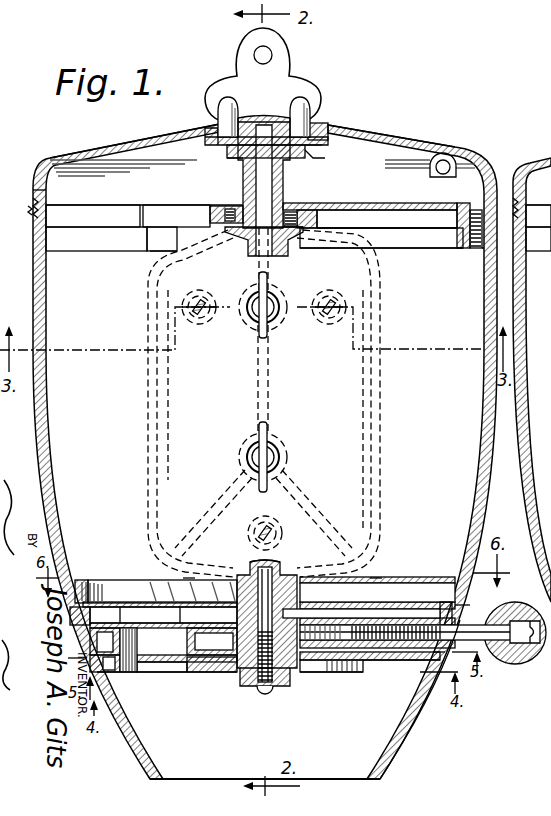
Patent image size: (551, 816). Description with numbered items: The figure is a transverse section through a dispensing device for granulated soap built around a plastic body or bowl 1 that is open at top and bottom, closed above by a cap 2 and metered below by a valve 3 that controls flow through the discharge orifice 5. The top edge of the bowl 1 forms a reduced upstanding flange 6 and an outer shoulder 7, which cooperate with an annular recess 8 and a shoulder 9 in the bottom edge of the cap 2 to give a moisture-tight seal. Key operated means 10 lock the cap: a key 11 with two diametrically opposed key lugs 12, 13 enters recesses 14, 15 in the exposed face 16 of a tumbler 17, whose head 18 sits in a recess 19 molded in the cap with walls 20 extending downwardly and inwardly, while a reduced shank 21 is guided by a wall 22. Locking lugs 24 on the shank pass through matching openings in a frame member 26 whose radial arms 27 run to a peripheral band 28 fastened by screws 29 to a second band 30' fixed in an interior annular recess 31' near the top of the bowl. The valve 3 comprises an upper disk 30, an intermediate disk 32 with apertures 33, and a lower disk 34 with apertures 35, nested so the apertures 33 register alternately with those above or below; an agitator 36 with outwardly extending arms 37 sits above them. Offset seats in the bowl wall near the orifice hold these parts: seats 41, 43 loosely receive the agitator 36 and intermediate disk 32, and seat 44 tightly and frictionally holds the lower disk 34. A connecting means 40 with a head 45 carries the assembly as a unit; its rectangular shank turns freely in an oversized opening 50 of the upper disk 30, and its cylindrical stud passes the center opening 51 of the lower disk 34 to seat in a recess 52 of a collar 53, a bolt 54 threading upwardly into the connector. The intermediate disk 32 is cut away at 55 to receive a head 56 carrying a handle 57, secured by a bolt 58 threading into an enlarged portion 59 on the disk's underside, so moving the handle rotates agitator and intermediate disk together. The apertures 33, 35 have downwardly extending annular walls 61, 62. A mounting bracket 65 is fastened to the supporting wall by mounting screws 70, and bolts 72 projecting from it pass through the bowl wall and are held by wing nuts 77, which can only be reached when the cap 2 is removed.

The bowl 1 is at (40, 433).
The cap 2 is at (390, 146).
The valve 3 is at (348, 690).
The discharge orifice 5 is at (348, 774).
The upstanding flange 6 is at (33, 189).
The outer shoulder 7 is at (484, 186).
The annular recess 8 is at (46, 209).
The shoulder 9 is at (30, 215).
The key operated means 10 is at (372, 189).
The key 11 is at (319, 76).
The key lug 12 is at (311, 112).
The key lug 13 is at (224, 120).
The recess 14 is at (314, 152).
The recess 15 is at (230, 152).
The exposed face 16 is at (265, 116).
The tumbler 17 is at (238, 163).
The head 18 is at (210, 142).
The recess 19 is at (326, 127).
The walls 20 is at (315, 144).
The reduced shank 21 is at (284, 190).
The wall 22 is at (284, 165).
The locking lugs 24 is at (254, 228).
The frame member 26 is at (216, 205).
The radial arms 27 is at (387, 201).
The peripheral band 28 is at (460, 218).
The screws 29 is at (464, 240).
The upper disk 30 is at (159, 580).
The second band 30' is at (291, 273).
The annular recess 31' is at (465, 280).
The intermediate disk 32 is at (103, 624).
The apertures 33 is at (110, 652).
The lower disk 34 is at (405, 662).
The apertures 35 is at (168, 668).
The agitator 36 is at (377, 592).
The arms 37 is at (184, 578).
The connecting means 40 is at (243, 575).
The seat 41 is at (470, 606).
The seat 43 is at (450, 655).
The seat 44 is at (443, 652).
The head 45 is at (283, 566).
The opening 50 is at (230, 676).
The center opening 51 is at (232, 700).
The recess 52 is at (291, 680).
The collar 53 is at (272, 690).
The bolt 54 is at (265, 696).
The cut away 55 is at (396, 610).
The head 56 is at (446, 600).
The handle 57 is at (516, 605).
The bolt 58 is at (518, 660).
The enlarged portion 59 is at (425, 640).
The annular wall 61 is at (365, 600).
The annular wall 62 is at (310, 673).
The mounting bracket 65 is at (382, 419).
The mounting screws 70 is at (200, 297).
The bolts 72 is at (256, 311).
The wing nuts 77 is at (270, 320).